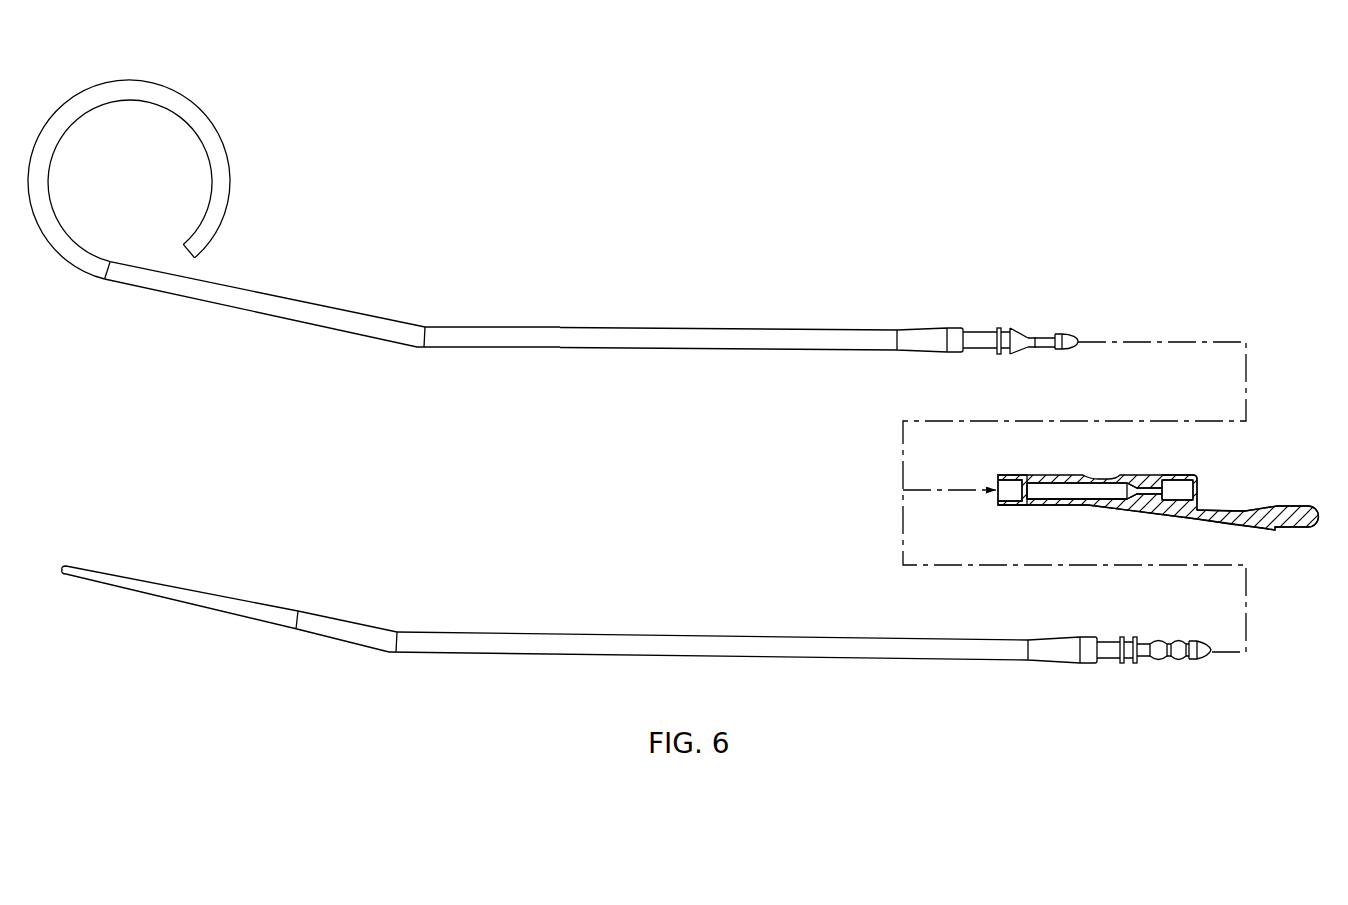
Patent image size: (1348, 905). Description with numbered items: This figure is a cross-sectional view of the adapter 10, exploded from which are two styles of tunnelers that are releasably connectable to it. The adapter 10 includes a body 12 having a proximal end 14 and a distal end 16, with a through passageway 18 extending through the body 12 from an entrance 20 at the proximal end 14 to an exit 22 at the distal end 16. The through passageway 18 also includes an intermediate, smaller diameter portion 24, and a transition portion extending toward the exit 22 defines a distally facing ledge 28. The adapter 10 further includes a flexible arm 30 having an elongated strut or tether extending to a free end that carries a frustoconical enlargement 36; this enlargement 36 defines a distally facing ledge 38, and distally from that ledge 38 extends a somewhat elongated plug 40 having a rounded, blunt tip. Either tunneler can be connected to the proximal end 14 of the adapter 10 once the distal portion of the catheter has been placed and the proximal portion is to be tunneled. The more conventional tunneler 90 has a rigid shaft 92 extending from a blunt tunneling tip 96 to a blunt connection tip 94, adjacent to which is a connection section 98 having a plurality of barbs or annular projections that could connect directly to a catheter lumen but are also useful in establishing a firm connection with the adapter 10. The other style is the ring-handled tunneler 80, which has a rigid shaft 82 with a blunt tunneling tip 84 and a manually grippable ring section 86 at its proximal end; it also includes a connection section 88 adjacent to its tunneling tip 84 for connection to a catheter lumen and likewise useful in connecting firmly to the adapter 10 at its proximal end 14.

The adapter 10 is at (1106, 456).
The body 12 is at (1066, 509).
The proximal end 14 is at (1009, 470).
The distal end 16 is at (1197, 473).
The through passageway 18 is at (1105, 493).
The entrance 20 is at (998, 500).
The exit 22 is at (1185, 493).
The intermediate, smaller diameter portion 24 is at (1038, 492).
The distally facing ledge 28 is at (1161, 483).
The flexible arm 30 is at (1191, 523).
The frustoconical enlargement 36 is at (1263, 533).
The distally facing ledge 38 is at (1278, 502).
The plug 40 is at (1311, 532).
The tunneler 80 is at (478, 322).
The rigid shaft 82 is at (674, 327).
The blunt tunneling tip 84 is at (1067, 333).
The ring section 86 is at (233, 171).
The connection section 88 is at (978, 330).
The tunneler 90 is at (496, 630).
The rigid shaft 92 is at (346, 616).
The blunt connection tip 94 is at (1211, 659).
The blunt tunneling tip 96 is at (73, 561).
The connection section 98 is at (1133, 668).